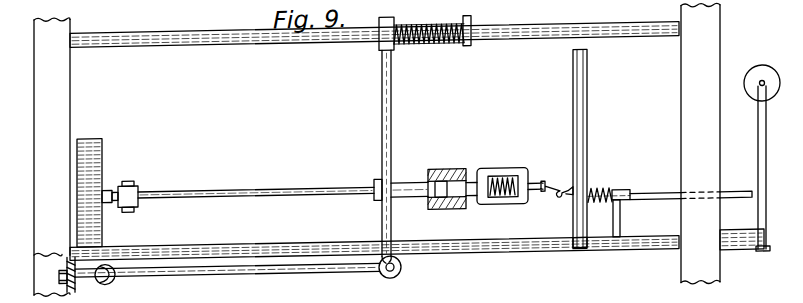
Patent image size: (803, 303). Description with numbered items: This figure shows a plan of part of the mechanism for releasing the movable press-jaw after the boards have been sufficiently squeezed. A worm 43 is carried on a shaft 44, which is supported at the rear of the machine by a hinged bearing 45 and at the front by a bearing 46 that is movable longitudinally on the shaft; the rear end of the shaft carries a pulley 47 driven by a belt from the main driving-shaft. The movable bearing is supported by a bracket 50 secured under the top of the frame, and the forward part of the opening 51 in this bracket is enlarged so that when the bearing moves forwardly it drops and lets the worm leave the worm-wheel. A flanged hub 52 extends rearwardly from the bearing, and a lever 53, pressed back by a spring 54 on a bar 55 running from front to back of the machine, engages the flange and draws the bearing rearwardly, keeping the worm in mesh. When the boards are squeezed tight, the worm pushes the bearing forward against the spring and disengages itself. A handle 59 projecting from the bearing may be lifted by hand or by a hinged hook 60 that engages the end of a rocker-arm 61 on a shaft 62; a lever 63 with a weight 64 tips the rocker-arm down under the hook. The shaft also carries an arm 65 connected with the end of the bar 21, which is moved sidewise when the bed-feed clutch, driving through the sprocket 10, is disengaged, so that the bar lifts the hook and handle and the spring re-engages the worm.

The sprocket 10 is at (650, 4).
The bar 21 is at (588, 85).
The worm 43 is at (510, 177).
The shaft 44 is at (310, 177).
The hinged bearing 45 is at (140, 181).
The bearing 46 is at (487, 169).
The pulley 47 is at (103, 143).
The bracket 50 is at (429, 168).
The opening 51 is at (432, 195).
The flanged hub 52 is at (374, 195).
The lever 53 is at (391, 104).
The spring 54 is at (443, 45).
The bar 55 is at (266, 41).
The handle 59 is at (667, 191).
The hinged hook 60 is at (622, 192).
The rocker-arm 61 is at (621, 222).
The shaft 62 is at (532, 254).
The lever 63 is at (758, 163).
The weight 64 is at (762, 73).
The arm 65 is at (592, 255).